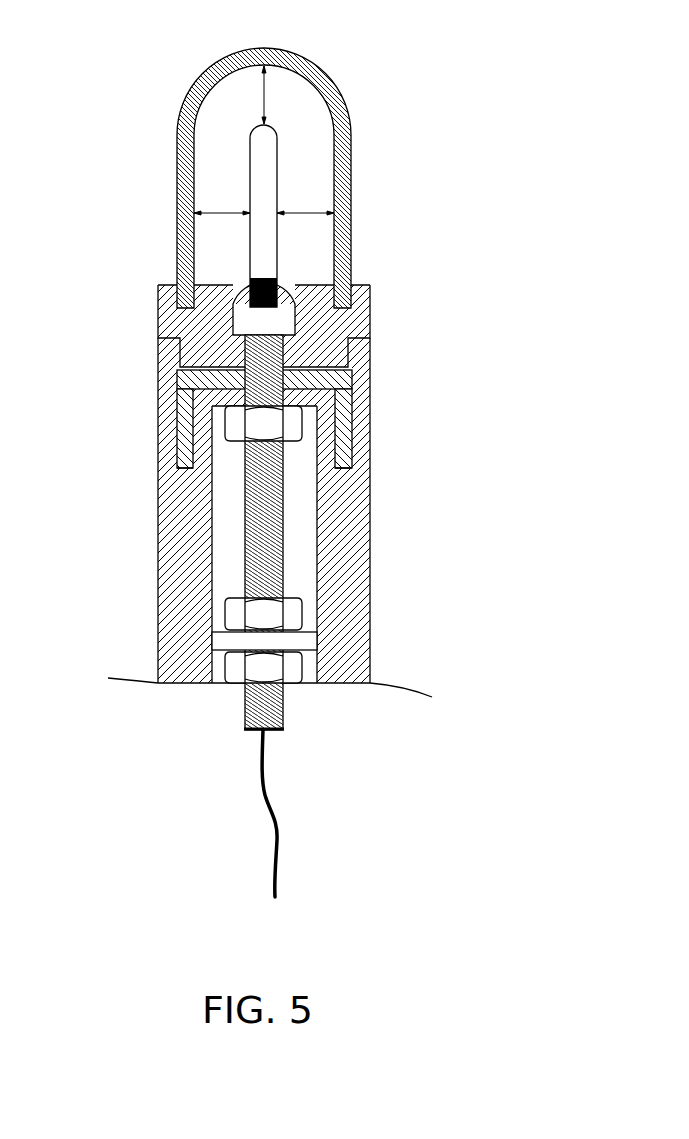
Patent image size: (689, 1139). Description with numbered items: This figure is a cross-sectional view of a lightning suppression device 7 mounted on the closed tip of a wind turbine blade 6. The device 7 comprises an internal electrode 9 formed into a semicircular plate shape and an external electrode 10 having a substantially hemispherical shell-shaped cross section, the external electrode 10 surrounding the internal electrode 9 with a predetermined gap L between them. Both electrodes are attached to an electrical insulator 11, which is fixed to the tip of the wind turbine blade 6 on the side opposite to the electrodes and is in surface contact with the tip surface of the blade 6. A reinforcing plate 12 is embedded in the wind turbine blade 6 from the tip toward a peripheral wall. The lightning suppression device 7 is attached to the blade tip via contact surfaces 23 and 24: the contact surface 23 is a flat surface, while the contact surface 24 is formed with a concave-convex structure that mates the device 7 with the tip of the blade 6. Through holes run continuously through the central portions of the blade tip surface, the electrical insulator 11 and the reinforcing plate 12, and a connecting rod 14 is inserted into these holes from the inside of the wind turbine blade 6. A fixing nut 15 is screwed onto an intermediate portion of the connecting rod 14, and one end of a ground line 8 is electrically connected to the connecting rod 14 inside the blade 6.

The wind turbine blade 6 is at (158, 635).
The lightning suppression device 7 is at (277, 159).
The ground line 8 is at (270, 833).
The internal electrode 9 is at (250, 157).
The external electrode 10 is at (351, 127).
The electrical insulator 11 is at (370, 313).
The reinforcing plate 12 is at (300, 481).
The connecting rod 14 is at (244, 728).
The fixing nut 15 is at (180, 468).
The contact surface 23 is at (370, 430).
The contact surface 24 is at (370, 377).